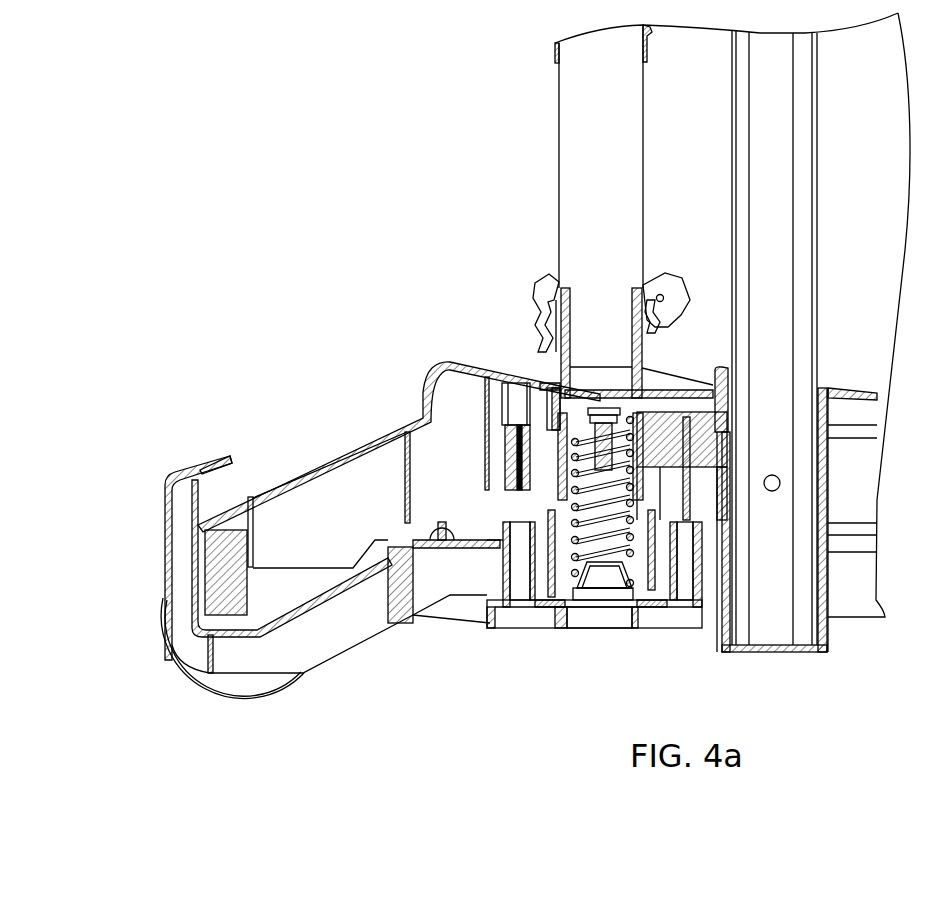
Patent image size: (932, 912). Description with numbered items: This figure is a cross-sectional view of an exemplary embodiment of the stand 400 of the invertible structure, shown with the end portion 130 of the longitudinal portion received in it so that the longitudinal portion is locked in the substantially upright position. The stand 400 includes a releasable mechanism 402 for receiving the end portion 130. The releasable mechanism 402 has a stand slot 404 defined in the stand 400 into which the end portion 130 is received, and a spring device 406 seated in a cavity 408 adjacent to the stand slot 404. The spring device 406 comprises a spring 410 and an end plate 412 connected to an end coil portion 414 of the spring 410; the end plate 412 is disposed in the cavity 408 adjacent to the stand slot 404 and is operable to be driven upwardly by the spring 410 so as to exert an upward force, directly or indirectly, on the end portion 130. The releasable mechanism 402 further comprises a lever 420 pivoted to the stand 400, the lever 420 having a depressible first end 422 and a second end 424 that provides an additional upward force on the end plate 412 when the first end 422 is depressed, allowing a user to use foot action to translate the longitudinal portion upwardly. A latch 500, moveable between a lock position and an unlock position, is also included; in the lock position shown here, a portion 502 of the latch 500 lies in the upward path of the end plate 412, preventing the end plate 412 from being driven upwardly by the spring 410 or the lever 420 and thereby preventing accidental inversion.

The end portion 130 is at (593, 290).
The stand 400 is at (596, 650).
The releasable mechanism 402 is at (514, 347).
The stand slot 404 is at (600, 380).
The spring device 406 is at (567, 580).
The cavity 408 is at (556, 462).
The spring 410 is at (624, 583).
The end plate 412 is at (652, 413).
The end coil portion 414 is at (556, 434).
The lever 420 is at (182, 480).
The first end 422 is at (215, 434).
The second end 424 is at (667, 585).
The latch 500 is at (566, 385).
The portion 502 is at (568, 392).